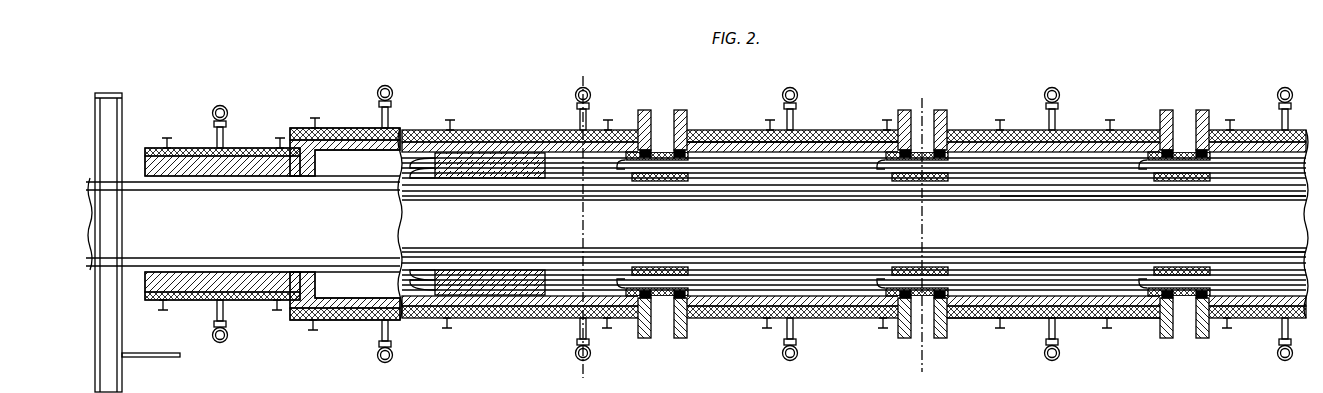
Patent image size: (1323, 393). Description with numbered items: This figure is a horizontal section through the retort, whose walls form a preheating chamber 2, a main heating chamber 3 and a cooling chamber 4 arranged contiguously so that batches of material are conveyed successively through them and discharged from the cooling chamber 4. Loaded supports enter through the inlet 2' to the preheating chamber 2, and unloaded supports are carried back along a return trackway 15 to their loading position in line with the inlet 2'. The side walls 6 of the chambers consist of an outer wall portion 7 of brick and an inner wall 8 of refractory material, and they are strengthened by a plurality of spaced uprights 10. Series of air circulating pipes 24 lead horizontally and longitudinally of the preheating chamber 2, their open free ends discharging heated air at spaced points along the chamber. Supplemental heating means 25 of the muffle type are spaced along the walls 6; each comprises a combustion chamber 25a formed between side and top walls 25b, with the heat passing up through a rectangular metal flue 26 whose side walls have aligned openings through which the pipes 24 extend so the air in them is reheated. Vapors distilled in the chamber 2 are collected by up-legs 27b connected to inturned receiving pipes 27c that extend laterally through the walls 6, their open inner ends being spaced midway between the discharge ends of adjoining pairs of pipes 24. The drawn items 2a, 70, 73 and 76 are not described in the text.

The preheating chamber 2 is at (854, 224).
The inlet 2' is at (243, 224).
The pipe section 2a is at (1153, 224).
The main heating chamber 3 is at (583, 226).
The cooling chamber 4 is at (918, 236).
The side walls 6 is at (1053, 332).
The outer wall portion 7 is at (851, 137).
The inner wall 8 is at (720, 146).
The uprights 10 is at (452, 122).
The return trackway 15 is at (153, 358).
The air circulating pipes 24 is at (1000, 295).
The supplemental heating means 25 is at (703, 128).
The combustion chamber 25a is at (932, 112).
The side and top walls 25b is at (640, 112).
The flue 26 is at (662, 268).
The up-legs 27b is at (391, 91).
The receiving pipes 27c is at (391, 117).
The stud 70 is at (317, 119).
The insulation block 73 is at (503, 247).
The support post 76 is at (107, 185).